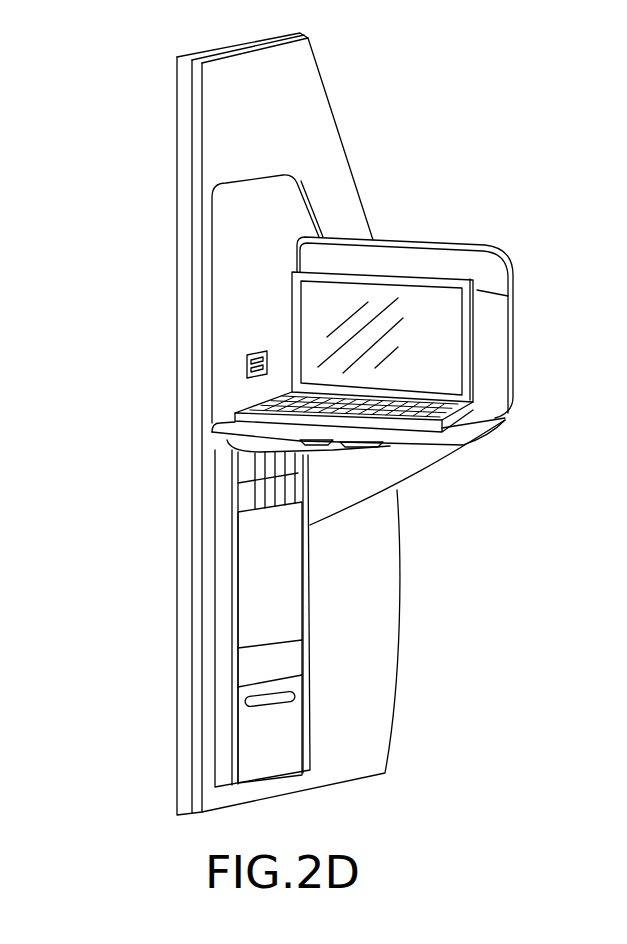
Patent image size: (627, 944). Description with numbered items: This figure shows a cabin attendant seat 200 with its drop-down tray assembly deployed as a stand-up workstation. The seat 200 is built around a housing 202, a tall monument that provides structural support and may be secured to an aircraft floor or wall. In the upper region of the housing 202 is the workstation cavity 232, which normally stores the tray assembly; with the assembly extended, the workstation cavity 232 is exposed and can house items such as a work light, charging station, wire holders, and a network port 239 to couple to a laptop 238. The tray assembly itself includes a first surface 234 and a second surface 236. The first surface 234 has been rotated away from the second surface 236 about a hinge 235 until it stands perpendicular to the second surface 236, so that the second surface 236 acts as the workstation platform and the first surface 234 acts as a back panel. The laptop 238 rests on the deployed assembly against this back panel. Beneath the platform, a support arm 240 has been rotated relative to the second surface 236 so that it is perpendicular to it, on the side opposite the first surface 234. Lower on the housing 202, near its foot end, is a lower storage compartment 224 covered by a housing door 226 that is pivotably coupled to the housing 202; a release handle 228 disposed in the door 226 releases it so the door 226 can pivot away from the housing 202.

The cabin attendant seat 200 is at (453, 155).
The housing 202 is at (232, 125).
The lower storage compartment 224 is at (360, 713).
The housing door 226 is at (262, 747).
The release handle 228 is at (292, 697).
The workstation cavity 232 is at (242, 215).
The first surface 234 is at (527, 290).
The hinge 235 is at (503, 418).
The second surface 236 is at (480, 410).
The laptop 238 is at (448, 328).
The network port 239 is at (247, 355).
The support arm 240 is at (387, 476).